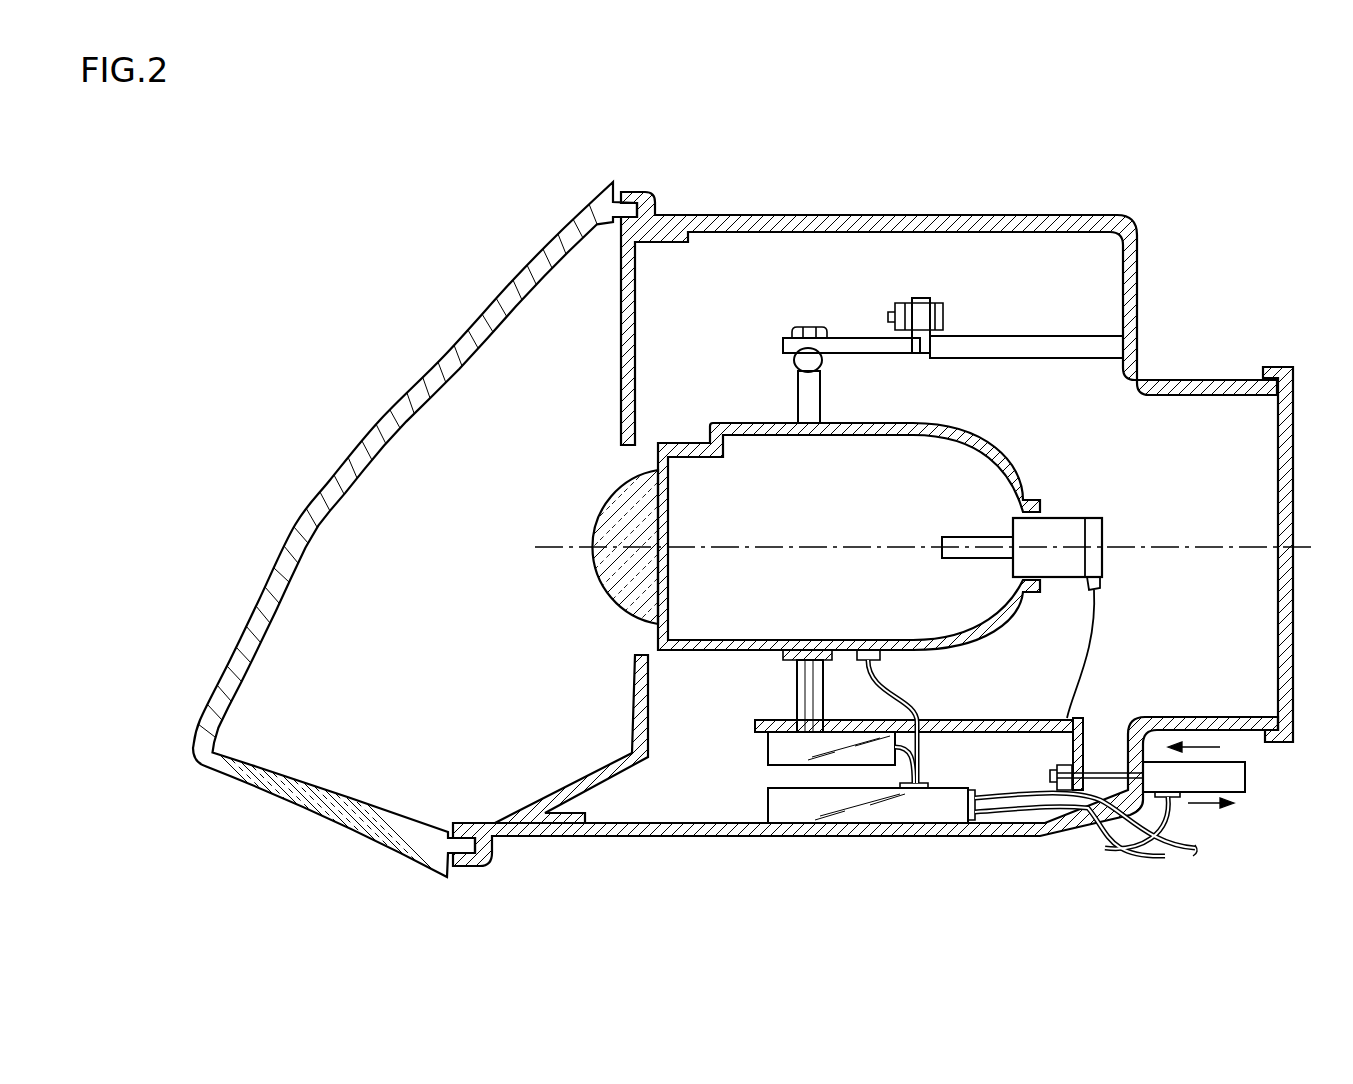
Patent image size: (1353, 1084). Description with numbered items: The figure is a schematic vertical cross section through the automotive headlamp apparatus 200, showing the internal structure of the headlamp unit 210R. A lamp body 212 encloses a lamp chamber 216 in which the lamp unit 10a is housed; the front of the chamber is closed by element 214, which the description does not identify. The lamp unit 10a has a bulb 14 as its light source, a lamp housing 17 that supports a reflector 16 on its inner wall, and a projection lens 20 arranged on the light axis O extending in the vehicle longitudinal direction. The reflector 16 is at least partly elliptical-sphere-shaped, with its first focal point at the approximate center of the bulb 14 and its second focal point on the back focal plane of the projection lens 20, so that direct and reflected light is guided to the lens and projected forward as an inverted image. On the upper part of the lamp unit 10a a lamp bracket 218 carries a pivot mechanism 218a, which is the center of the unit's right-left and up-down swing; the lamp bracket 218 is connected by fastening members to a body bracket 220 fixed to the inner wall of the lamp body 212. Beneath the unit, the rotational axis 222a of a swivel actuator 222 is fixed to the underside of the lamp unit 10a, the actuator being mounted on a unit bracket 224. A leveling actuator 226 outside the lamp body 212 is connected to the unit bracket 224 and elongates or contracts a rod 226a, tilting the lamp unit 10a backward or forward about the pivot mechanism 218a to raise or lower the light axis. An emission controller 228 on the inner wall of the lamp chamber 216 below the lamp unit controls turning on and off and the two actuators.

The automotive headlamp apparatus 200 is at (808, 914).
The headlamp unit 210R is at (1012, 206).
The lamp body 212 is at (845, 214).
The front cover lens 214 is at (462, 312).
The lamp chamber 216 is at (578, 365).
The lamp bracket 218 is at (851, 340).
The pivot mechanism 218a is at (796, 362).
The body bracket 220 is at (1027, 338).
The lamp unit 10a is at (715, 423).
The reflector 16 is at (907, 437).
The lamp housing 17 is at (958, 433).
The bulb 14 is at (978, 539).
The projection lens 20 is at (600, 506).
The light axis O is at (551, 550).
The rotational axis 222a is at (800, 712).
The swivel actuator 222 is at (776, 745).
The unit bracket 224 is at (968, 726).
The rod 226a is at (1111, 772).
The leveling actuator 226 is at (1240, 778).
The emission controller 228 is at (877, 812).